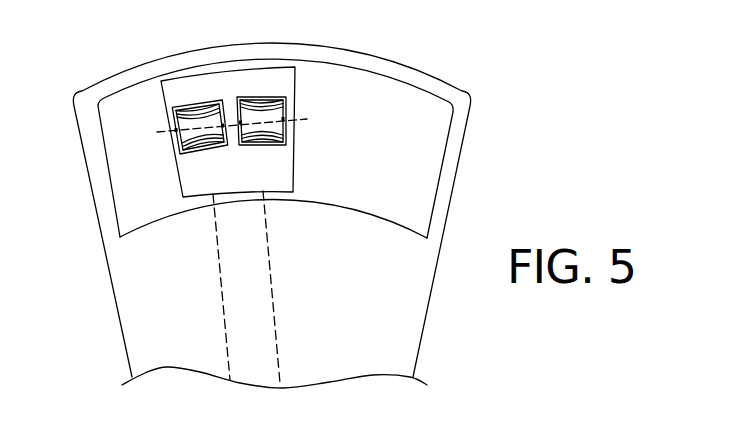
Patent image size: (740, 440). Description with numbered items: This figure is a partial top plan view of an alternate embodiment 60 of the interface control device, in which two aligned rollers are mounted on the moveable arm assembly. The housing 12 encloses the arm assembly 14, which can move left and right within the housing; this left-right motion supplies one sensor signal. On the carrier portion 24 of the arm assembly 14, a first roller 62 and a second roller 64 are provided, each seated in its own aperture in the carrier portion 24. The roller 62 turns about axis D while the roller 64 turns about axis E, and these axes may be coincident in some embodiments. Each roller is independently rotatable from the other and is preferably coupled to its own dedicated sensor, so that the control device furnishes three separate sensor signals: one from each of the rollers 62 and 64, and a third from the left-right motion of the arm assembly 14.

The alternate embodiment of the control device 60 is at (490, 44).
The housing 12 is at (403, 333).
The arm assembly 14 is at (206, 241).
The carrier portion 24 is at (283, 165).
The roller 62 is at (202, 118).
The roller 64 is at (268, 112).